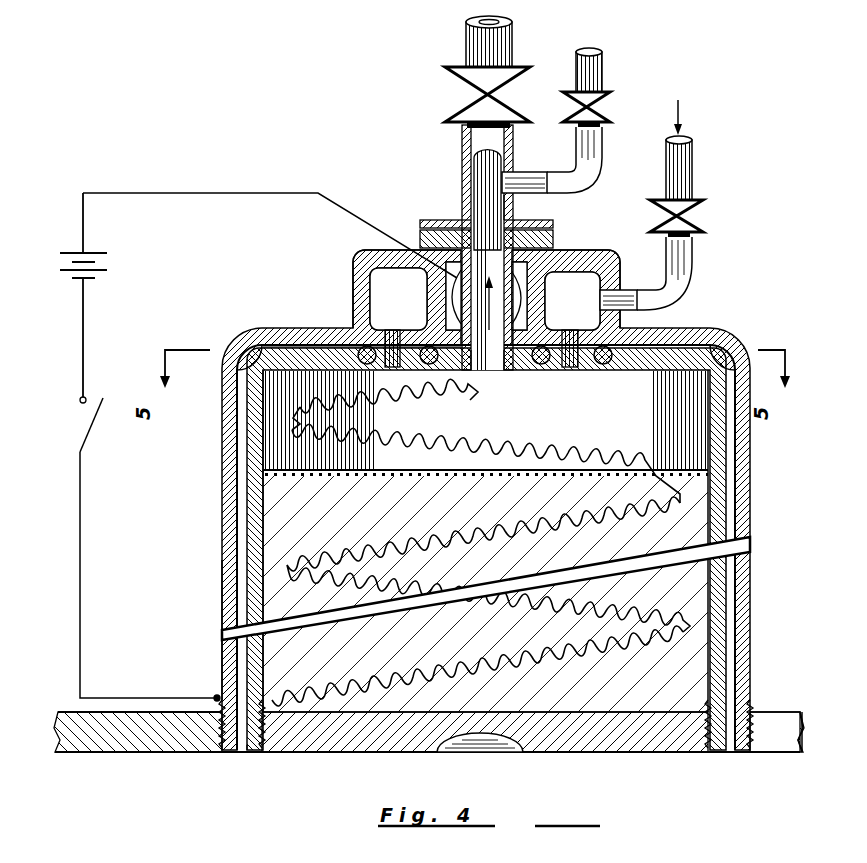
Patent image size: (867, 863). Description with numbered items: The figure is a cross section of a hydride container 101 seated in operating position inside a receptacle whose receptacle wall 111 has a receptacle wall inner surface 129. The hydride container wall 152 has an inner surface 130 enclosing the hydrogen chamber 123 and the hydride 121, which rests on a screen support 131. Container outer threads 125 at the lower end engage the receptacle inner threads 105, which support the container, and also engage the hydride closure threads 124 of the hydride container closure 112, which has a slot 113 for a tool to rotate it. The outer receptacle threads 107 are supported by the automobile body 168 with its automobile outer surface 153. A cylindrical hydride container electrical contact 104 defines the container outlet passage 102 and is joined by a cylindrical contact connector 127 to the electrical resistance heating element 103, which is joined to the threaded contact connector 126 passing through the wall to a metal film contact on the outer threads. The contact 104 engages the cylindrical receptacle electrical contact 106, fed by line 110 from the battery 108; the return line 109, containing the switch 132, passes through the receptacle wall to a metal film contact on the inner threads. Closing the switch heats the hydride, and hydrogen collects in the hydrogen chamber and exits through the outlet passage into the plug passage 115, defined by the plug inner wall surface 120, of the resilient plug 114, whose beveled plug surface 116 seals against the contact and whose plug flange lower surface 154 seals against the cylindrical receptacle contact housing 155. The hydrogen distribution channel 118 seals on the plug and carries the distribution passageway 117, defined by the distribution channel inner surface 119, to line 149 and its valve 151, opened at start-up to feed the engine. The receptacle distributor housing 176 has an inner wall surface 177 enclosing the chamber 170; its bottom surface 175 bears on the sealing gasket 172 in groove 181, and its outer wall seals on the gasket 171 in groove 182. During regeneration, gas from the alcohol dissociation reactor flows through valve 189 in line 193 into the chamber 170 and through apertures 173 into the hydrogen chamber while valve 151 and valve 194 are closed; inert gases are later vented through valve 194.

The hydride container 101 is at (240, 492).
The container outlet passage 102 is at (490, 358).
The electrical resistance heating element 103 is at (440, 452).
The cylindrical hydride container electrical contact 104 is at (455, 326).
The receptacle inner threads 105 is at (236, 752).
The cylindrical receptacle electrical contact 106 is at (440, 289).
The outer receptacle threads 107 is at (225, 750).
The battery 108 is at (105, 260).
The line 109 is at (82, 560).
The line 110 is at (210, 192).
The receptacle wall 111 is at (222, 604).
The hydride container closure 112 is at (672, 746).
The slot 113 is at (487, 746).
The resilient plug 114 is at (555, 229).
The plug passage 115 is at (497, 233).
The beveled plug surface 116 is at (553, 247).
The distribution passageway 117 is at (487, 164).
The hydrogen distribution channel 118 is at (462, 146).
The distribution channel inner surface 119 is at (500, 162).
The plug inner wall surface 120 is at (508, 210).
The hydride 121 is at (498, 373).
The hydrogen chamber 123 is at (531, 445).
The hydride closure threads 124 is at (282, 752).
The container outer threads 125 is at (252, 752).
The threaded contact connector 126 is at (270, 700).
The cylindrical contact connector 127 is at (480, 392).
The receptacle wall inner surface 129 is at (240, 545).
The inner surface of hydride container wall 130 is at (265, 575).
The screen support 131 is at (668, 468).
The switch 132 is at (88, 412).
The line 149 is at (478, 44).
The valve 151 is at (485, 96).
The hydride container wall 152 is at (246, 518).
The automobile outer surface 153 is at (788, 752).
The plug flange lower surface 154 is at (448, 271).
The cylindrical receptacle contact housing 155 is at (615, 270).
The automobile body 168 is at (780, 712).
The chamber 170 is at (585, 307).
The gasket 171 is at (603, 365).
The sealing gasket 172 is at (545, 365).
The apertures 173 is at (570, 367).
The bottom surface of distributor inner wall 175 is at (378, 345).
The receptacle distributor housing 176 is at (355, 268).
The inner wall surface 177 is at (622, 316).
The groove 181 is at (426, 365).
The groove 182 is at (362, 365).
The valve 189 is at (690, 216).
The line 193 is at (688, 278).
The valve 194 is at (598, 107).